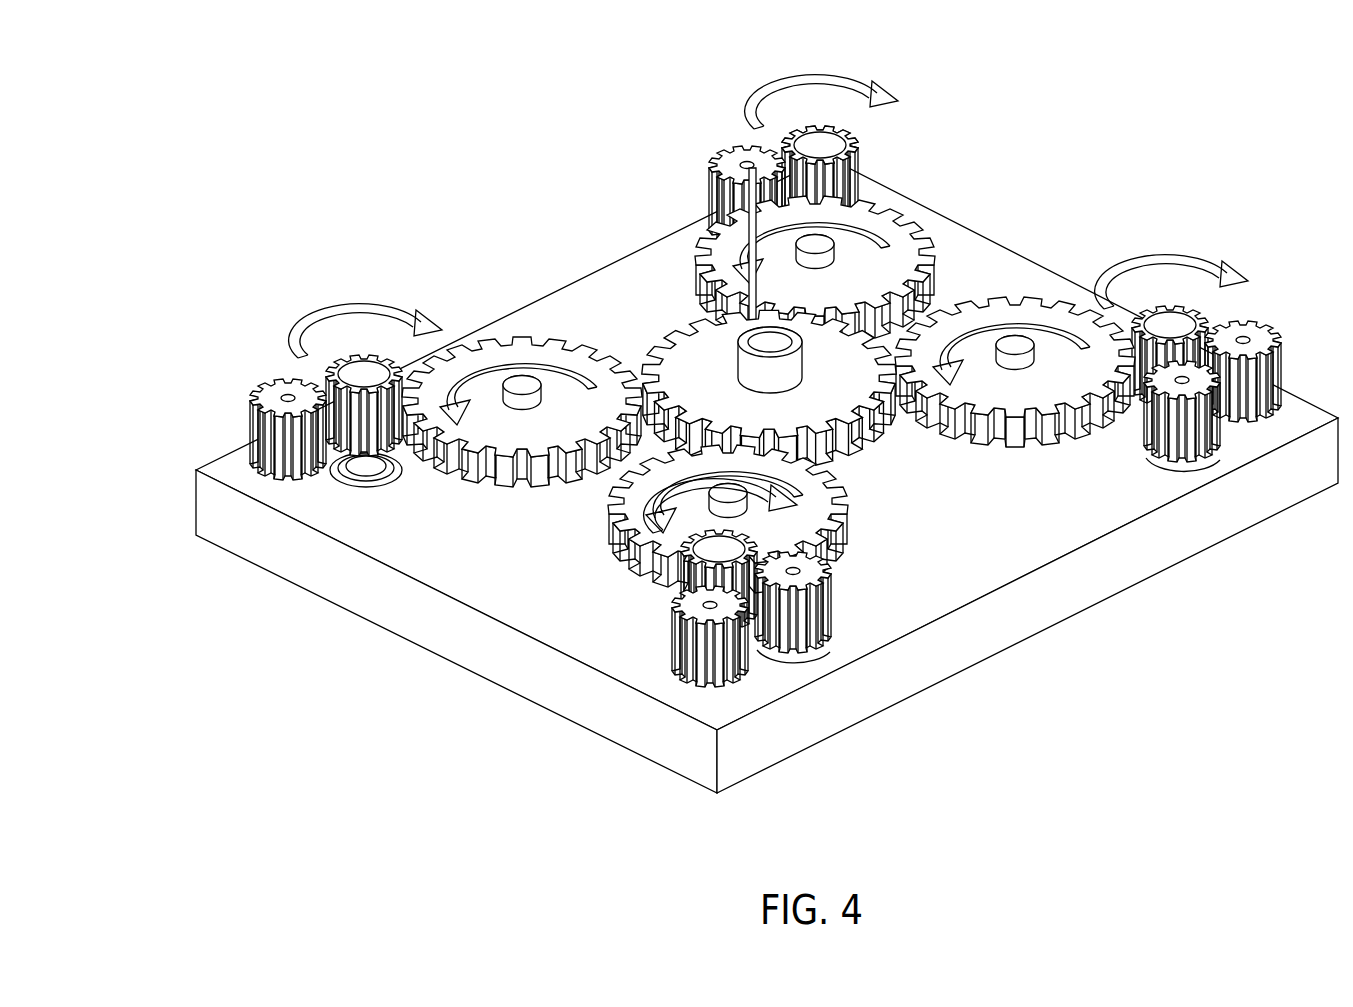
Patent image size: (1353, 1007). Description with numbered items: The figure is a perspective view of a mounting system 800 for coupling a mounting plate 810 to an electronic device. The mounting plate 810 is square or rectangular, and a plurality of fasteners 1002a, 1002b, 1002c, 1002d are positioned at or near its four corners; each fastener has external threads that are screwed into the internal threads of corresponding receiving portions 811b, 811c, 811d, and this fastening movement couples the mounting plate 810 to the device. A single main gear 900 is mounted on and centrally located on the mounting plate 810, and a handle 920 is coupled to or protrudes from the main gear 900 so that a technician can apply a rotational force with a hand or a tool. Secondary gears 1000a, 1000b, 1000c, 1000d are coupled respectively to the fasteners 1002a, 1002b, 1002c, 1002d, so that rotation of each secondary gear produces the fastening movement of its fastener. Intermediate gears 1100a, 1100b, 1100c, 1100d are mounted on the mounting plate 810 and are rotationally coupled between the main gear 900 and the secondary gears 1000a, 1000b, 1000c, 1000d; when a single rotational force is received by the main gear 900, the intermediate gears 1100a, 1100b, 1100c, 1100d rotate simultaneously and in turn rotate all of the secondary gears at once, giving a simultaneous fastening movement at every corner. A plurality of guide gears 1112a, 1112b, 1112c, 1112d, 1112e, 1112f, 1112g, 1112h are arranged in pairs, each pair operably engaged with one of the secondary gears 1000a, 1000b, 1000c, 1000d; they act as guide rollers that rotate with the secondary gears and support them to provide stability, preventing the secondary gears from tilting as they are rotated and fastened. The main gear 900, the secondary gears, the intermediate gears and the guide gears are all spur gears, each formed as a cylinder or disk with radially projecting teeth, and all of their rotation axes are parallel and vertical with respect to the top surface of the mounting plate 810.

The mounting system 800 is at (458, 102).
The mounting plate 810 is at (368, 622).
The receiving portion 811b is at (335, 478).
The receiving portion 811c is at (752, 652).
The receiving portion 811d is at (1195, 470).
The single main gear 900 is at (740, 333).
The handle 920 is at (690, 318).
The secondary gear 1000a is at (792, 137).
The secondary gear 1000b is at (373, 355).
The secondary gear 1000c is at (621, 621).
The secondary gear 1000d is at (1181, 308).
The fastener 1002a is at (792, 138).
The fastener 1002b is at (362, 488).
The fastener 1002c is at (668, 596).
The fastener 1002d is at (1168, 322).
The intermediate gear 1100a is at (1040, 315).
The intermediate gear 1100b is at (615, 598).
The intermediate gear 1100c is at (512, 340).
The intermediate gear 1100d is at (935, 240).
The guide gear 1112a is at (1272, 338).
The guide gear 1112b is at (1225, 455).
The guide gear 1112c is at (823, 650).
The guide gear 1112d is at (688, 692).
The guide gear 1112e is at (262, 393).
The guide gear 1112f is at (366, 350).
The guide gear 1112g is at (735, 150).
The guide gear 1112h is at (860, 140).